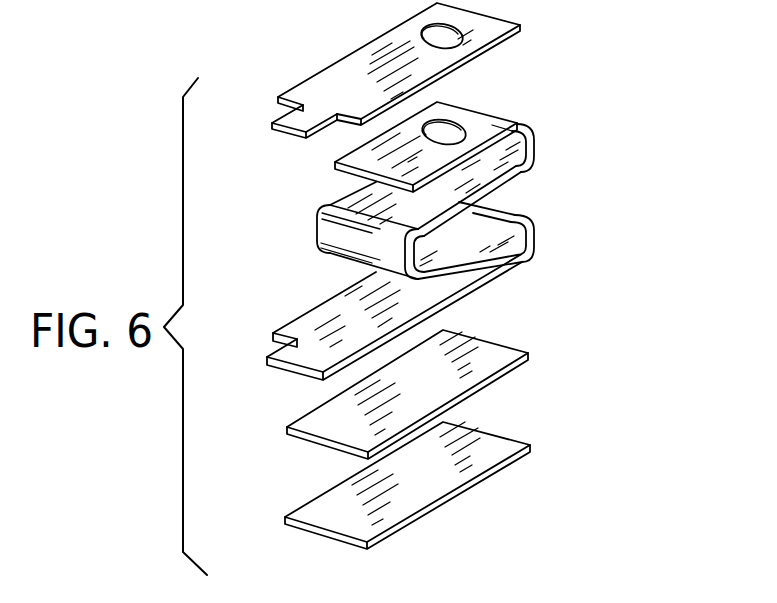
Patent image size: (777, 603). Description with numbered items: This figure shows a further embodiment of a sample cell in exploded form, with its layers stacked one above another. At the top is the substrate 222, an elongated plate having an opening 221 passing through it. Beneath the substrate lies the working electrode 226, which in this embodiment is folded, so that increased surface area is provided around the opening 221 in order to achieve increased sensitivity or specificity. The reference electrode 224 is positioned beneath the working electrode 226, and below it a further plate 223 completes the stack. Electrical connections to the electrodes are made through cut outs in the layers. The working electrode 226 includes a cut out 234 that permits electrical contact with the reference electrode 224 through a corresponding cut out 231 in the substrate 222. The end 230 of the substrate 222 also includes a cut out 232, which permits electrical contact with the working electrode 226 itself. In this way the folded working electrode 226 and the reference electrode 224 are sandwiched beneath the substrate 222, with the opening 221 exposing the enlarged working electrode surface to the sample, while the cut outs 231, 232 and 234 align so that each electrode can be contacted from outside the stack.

The opening 221 is at (432, 32).
The substrate 222 is at (509, 35).
The bottom plate 223 is at (473, 445).
The reference electrode 224 is at (485, 350).
The working electrode 226 is at (534, 236).
The end of substrate 230 is at (272, 128).
The cut out in substrate 231 is at (276, 113).
The cut out in end of substrate 232 is at (342, 130).
The cut out in working electrode 234 is at (272, 338).